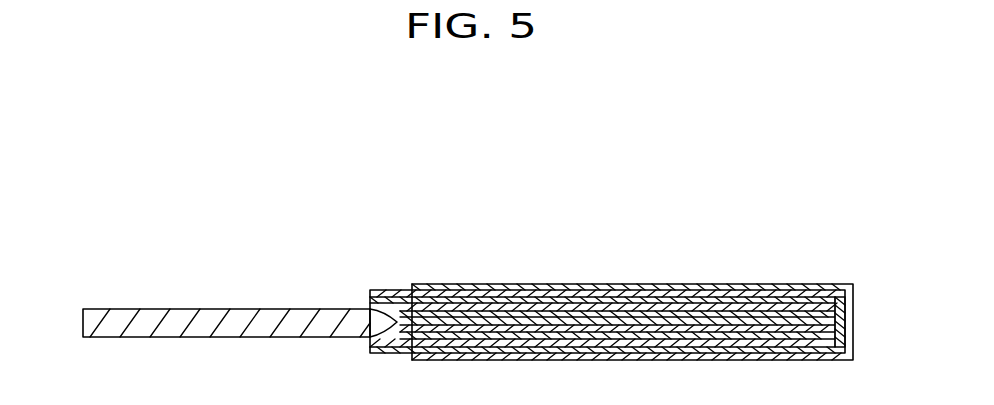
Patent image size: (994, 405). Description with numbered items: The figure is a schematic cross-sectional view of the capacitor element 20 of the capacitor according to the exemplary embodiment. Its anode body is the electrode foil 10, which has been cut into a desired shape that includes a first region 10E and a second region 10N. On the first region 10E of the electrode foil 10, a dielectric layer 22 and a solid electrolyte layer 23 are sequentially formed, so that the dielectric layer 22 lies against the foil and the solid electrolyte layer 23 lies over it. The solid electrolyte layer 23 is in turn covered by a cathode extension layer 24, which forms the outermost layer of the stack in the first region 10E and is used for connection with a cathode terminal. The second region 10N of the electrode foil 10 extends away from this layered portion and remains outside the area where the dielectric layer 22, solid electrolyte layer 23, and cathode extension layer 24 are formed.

The electrode foil 10 is at (318, 222).
The second region 10N is at (182, 321).
The first region 10E is at (395, 304).
The capacitor element 20 is at (515, 255).
The dielectric layer 22 is at (832, 290).
The solid electrolyte layer 23 is at (759, 291).
The cathode extension layer 24 is at (683, 284).